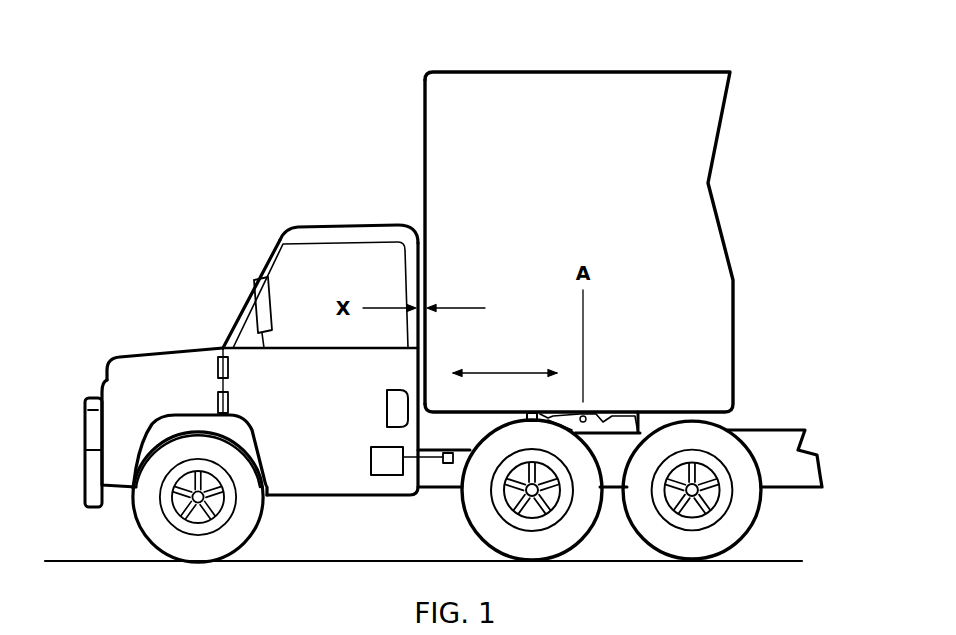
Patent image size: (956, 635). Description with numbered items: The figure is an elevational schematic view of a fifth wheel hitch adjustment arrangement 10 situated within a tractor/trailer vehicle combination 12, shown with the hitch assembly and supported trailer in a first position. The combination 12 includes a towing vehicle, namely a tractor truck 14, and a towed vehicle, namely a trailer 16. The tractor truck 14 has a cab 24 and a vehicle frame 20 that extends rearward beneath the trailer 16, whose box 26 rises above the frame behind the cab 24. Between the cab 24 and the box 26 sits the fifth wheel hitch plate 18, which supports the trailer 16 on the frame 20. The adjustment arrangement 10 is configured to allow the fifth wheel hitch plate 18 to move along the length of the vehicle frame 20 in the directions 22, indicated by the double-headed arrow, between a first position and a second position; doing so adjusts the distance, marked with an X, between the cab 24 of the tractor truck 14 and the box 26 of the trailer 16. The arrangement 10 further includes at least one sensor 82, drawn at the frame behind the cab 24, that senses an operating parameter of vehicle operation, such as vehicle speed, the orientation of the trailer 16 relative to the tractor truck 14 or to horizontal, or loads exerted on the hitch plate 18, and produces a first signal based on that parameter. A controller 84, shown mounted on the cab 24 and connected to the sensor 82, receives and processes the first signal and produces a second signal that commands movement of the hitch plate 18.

The fifth wheel hitch adjustment arrangement 10 is at (610, 445).
The tractor/trailer vehicle combination 12 is at (283, 100).
The tractor truck 14 is at (272, 241).
The trailer 16 is at (614, 68).
The fifth wheel hitch plate 18 is at (598, 412).
The vehicle frame 20 is at (773, 442).
The directions 22 is at (507, 372).
The cab 24 is at (320, 228).
The box 26 is at (424, 118).
The sensor 82 is at (444, 464).
The controller 84 is at (380, 447).